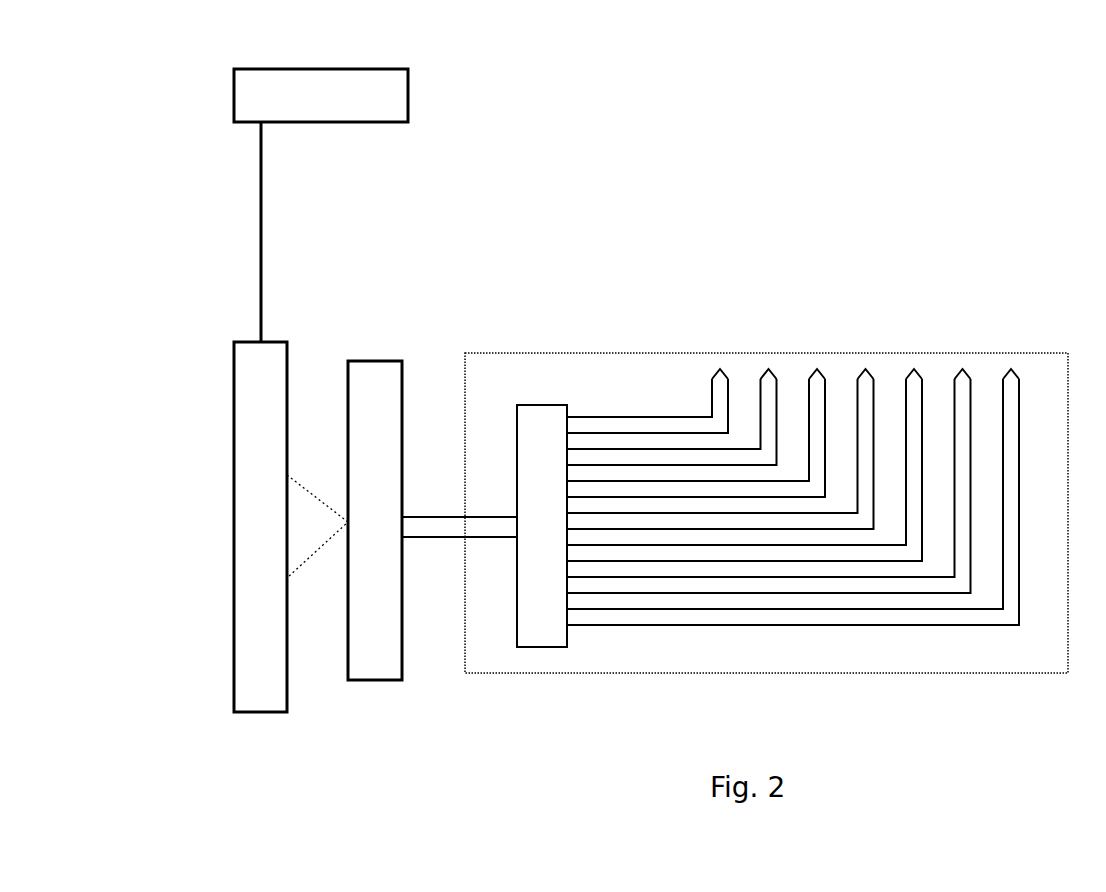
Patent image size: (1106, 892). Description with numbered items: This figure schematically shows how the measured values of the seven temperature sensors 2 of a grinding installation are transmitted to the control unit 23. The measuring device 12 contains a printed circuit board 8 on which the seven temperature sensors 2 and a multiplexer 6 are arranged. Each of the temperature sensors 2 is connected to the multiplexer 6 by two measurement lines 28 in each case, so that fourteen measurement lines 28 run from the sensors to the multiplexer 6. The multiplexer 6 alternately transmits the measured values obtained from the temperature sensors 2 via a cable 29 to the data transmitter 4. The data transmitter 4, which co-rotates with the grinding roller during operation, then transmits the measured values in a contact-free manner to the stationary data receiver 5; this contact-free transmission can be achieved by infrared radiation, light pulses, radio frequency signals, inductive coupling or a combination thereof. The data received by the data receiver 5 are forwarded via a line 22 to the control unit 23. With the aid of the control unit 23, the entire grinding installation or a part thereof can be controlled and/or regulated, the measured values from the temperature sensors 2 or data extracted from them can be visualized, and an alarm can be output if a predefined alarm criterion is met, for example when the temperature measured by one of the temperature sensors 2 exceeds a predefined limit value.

The temperature sensors 2 is at (1011, 369).
The data transmitter 4 is at (373, 375).
The data receiver 5 is at (256, 442).
The multiplexer 6 is at (538, 423).
The printed circuit board 8 is at (617, 373).
The measuring device 12 is at (765, 277).
The line 22 is at (261, 262).
The control unit 23 is at (385, 103).
The measurement lines 28 is at (931, 576).
The cable 29 is at (427, 527).